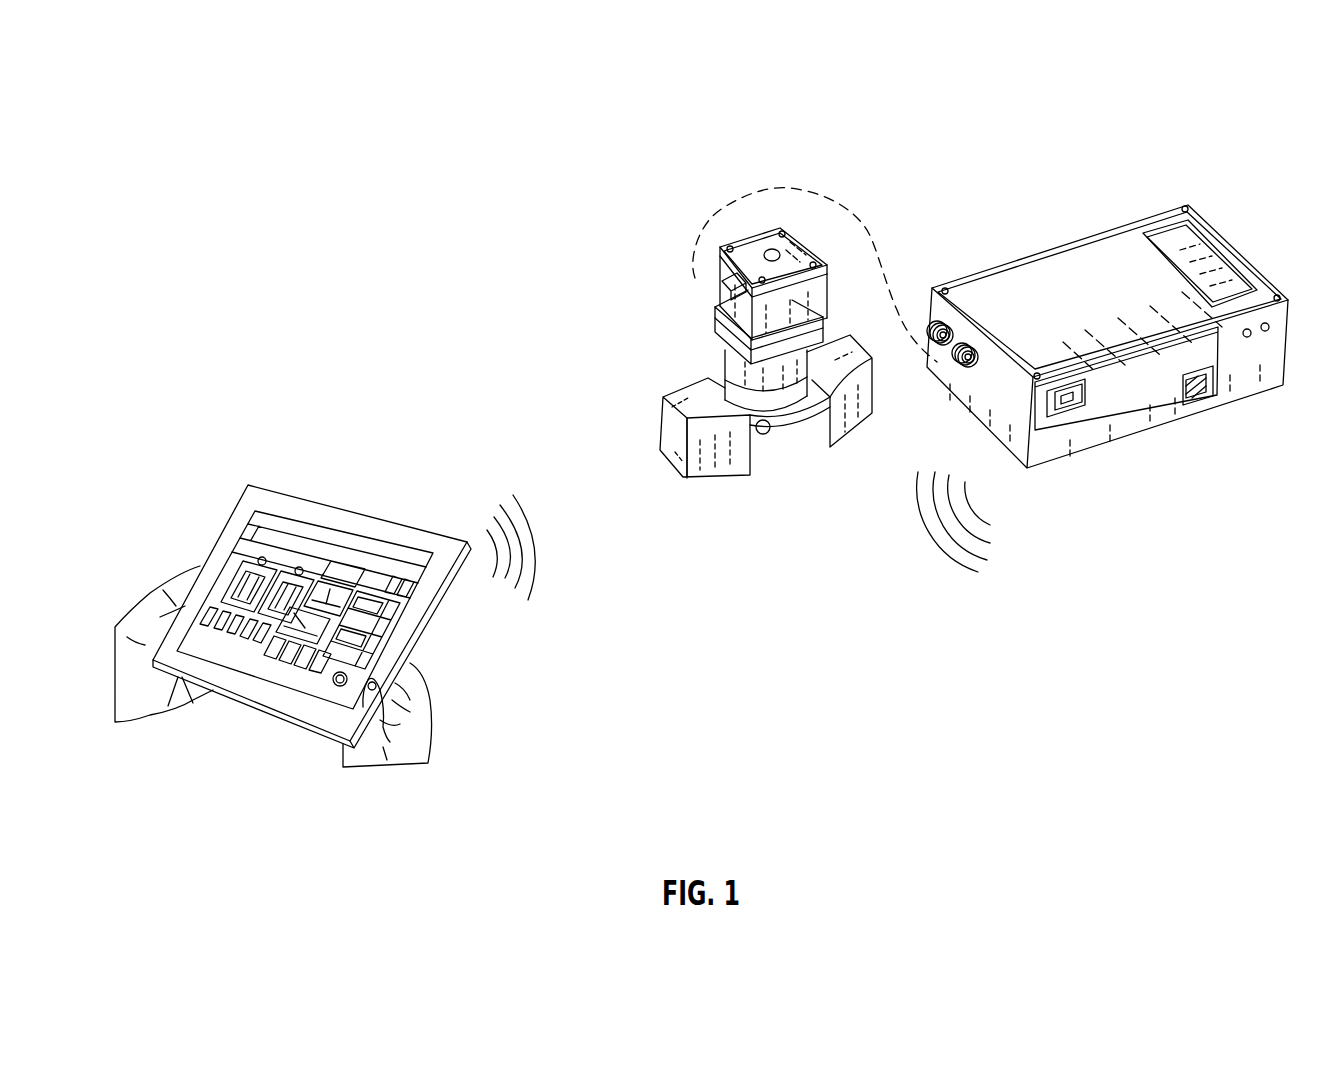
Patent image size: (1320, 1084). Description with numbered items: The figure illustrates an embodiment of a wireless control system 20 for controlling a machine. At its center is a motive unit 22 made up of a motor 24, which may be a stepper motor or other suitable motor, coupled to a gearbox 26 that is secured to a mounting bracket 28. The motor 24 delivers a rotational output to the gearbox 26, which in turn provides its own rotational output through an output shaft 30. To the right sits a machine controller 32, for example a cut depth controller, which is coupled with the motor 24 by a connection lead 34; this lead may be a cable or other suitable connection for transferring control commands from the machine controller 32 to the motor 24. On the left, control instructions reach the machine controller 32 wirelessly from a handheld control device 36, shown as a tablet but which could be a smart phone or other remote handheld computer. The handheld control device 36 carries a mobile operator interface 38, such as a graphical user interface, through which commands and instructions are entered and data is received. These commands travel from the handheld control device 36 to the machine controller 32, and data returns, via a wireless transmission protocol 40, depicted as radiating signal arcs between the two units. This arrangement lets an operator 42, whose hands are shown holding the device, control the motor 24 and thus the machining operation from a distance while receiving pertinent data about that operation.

The wireless control system 20 is at (1213, 121).
The motive unit 22 is at (667, 309).
The motor 24 is at (717, 295).
The gearbox 26 is at (723, 362).
The mounting bracket 28 is at (668, 432).
The output shaft 30 is at (760, 431).
The machine controller 32 is at (1091, 226).
The connection lead 34 is at (787, 188).
The handheld control device 36 is at (205, 521).
The mobile operator interface 38 is at (387, 608).
The wireless transmission protocol 40 is at (562, 551).
The operator 42 is at (410, 760).